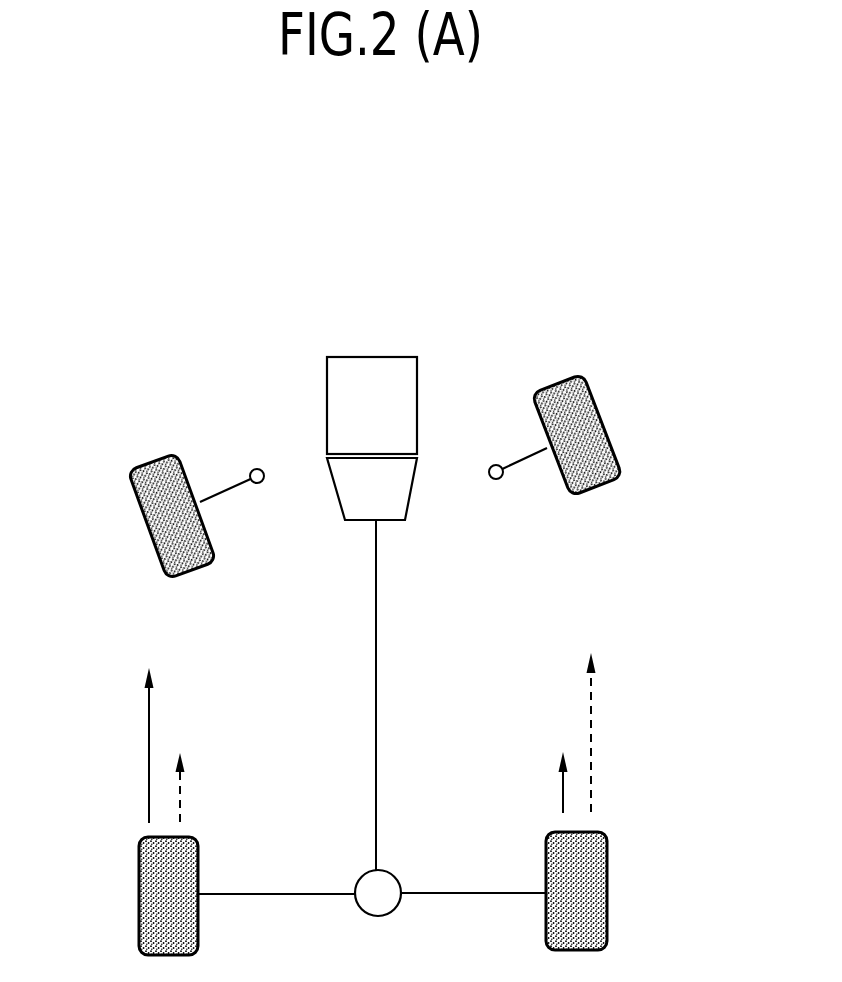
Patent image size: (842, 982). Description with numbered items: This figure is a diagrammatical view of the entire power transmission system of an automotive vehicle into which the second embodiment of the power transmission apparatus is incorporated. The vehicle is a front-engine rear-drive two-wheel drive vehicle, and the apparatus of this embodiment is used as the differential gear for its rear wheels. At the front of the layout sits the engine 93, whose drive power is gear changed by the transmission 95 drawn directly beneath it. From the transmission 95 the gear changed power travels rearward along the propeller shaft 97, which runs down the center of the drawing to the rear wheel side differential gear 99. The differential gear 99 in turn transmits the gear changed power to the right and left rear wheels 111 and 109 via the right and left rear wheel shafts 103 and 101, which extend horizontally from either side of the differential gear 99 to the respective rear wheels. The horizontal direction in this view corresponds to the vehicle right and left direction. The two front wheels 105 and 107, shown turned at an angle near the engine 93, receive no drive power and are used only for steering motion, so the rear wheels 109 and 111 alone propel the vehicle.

The engine 93 is at (410, 380).
The transmission 95 is at (400, 490).
The propeller shaft 97 is at (376, 683).
The rear wheel side differential gear 99 is at (395, 882).
The left rear wheel shaft 101 is at (258, 897).
The right rear wheel shaft 103 is at (455, 895).
The front wheel 105 is at (138, 468).
The front wheel 107 is at (617, 480).
The left rear wheel 109 is at (139, 895).
The right rear wheel 111 is at (607, 880).